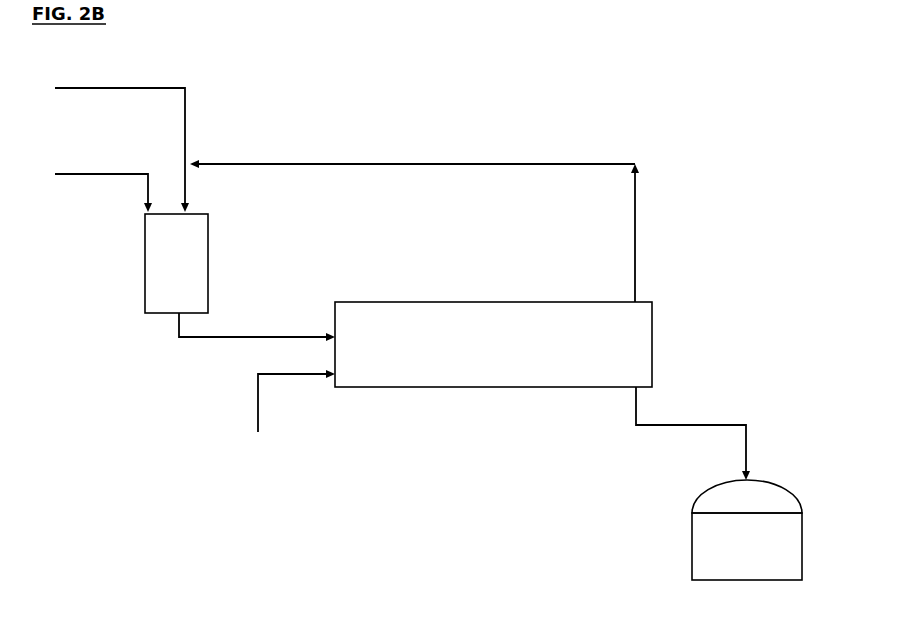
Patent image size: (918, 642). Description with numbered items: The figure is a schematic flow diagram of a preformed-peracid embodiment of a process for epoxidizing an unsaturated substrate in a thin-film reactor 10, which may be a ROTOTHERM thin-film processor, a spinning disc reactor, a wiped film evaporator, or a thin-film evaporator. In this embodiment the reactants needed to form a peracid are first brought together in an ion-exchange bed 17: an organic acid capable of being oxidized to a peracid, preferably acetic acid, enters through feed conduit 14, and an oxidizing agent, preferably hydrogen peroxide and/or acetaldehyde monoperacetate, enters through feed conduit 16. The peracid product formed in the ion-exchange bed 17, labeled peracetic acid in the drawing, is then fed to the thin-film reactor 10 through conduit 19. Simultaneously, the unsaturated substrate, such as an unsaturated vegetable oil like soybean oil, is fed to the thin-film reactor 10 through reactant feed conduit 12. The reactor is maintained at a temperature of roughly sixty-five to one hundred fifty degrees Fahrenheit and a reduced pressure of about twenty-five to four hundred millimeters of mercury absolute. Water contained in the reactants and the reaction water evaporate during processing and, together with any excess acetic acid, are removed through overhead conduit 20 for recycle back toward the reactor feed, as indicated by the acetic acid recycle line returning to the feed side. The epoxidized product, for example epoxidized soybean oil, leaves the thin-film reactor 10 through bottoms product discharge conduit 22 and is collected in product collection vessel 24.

The thin-film reactor 10 is at (493, 344).
The reactant feed conduit 12 is at (258, 415).
The feed conduit 14 is at (146, 88).
The feed conduit 16 is at (119, 174).
The ion-exchange bed 17 is at (145, 283).
The conduit 19 is at (210, 338).
The overhead conduit 20 is at (635, 222).
The bottoms product discharge conduit 22 is at (636, 410).
The product collection vessel 24 is at (747, 530).